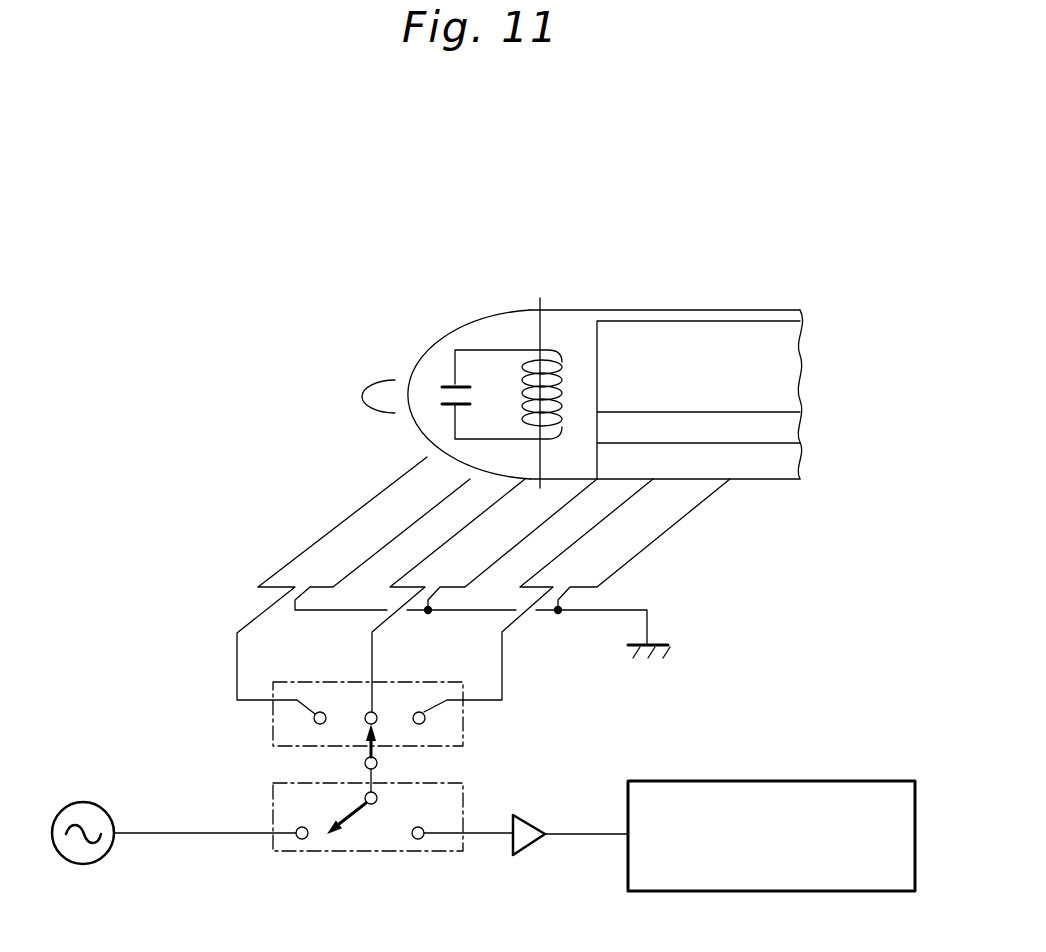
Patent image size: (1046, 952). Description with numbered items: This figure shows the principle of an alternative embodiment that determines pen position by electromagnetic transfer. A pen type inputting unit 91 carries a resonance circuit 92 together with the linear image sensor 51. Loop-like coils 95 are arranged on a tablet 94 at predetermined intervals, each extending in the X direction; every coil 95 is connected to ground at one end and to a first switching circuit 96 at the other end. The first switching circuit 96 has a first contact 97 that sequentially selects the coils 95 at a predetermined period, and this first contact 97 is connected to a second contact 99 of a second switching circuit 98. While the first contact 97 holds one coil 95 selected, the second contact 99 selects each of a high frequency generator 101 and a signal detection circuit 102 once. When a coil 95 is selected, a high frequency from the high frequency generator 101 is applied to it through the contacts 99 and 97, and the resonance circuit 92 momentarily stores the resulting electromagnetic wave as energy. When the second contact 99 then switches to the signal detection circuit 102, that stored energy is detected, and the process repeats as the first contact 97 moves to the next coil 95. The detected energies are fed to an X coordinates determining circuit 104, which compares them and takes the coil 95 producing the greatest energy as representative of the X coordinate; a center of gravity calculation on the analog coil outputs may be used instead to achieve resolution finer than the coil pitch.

The linear image sensor 51 is at (733, 338).
The pen type inputting unit 91 is at (603, 308).
The resonance circuit 92 is at (455, 368).
The tablet 94 is at (533, 577).
The loop-like coils 95 is at (392, 485).
The first switching circuit 96 is at (463, 726).
The first contact 97 is at (371, 750).
The second switching circuit 98 is at (407, 851).
The second contact 99 is at (363, 808).
The high frequency generator 101 is at (85, 802).
The signal detection circuit 102 is at (532, 847).
The X coordinates determining circuit 104 is at (760, 781).